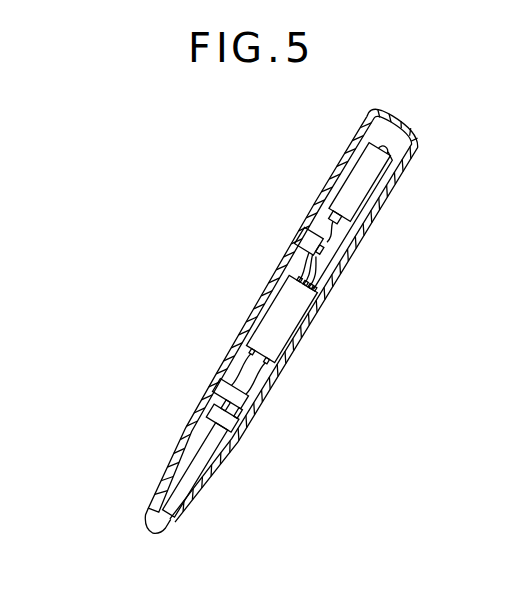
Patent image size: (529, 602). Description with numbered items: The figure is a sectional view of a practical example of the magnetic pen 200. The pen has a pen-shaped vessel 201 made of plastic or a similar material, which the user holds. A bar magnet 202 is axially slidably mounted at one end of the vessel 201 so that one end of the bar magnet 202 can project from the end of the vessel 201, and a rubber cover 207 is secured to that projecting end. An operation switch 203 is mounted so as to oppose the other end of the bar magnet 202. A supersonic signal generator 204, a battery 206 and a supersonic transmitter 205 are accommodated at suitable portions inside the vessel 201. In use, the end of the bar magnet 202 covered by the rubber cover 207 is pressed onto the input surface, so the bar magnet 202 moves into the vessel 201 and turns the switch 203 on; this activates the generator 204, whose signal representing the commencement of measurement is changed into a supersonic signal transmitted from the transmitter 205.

The magnetic pen 200 is at (381, 268).
The pen-shaped vessel 201 is at (413, 128).
The bar magnet 202 is at (181, 495).
The operation switch 203 is at (246, 397).
The supersonic signal generator 204 is at (290, 322).
The supersonic transmitter 205 is at (296, 246).
The battery 206 is at (363, 185).
The rubber cover 207 is at (152, 533).